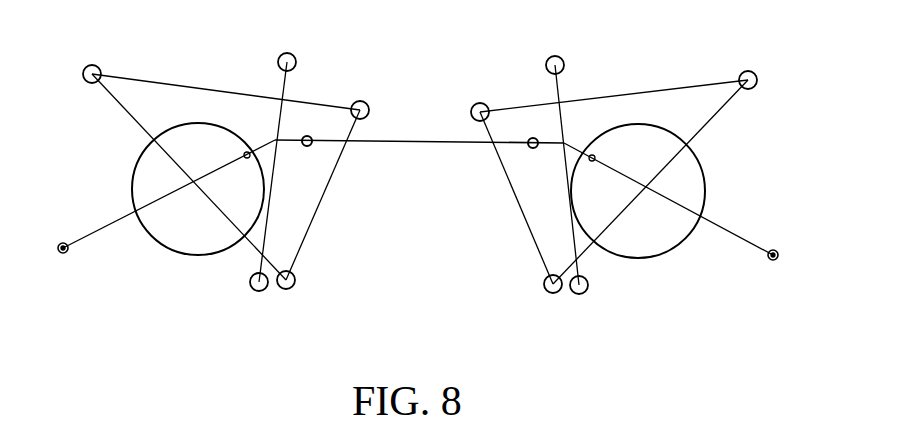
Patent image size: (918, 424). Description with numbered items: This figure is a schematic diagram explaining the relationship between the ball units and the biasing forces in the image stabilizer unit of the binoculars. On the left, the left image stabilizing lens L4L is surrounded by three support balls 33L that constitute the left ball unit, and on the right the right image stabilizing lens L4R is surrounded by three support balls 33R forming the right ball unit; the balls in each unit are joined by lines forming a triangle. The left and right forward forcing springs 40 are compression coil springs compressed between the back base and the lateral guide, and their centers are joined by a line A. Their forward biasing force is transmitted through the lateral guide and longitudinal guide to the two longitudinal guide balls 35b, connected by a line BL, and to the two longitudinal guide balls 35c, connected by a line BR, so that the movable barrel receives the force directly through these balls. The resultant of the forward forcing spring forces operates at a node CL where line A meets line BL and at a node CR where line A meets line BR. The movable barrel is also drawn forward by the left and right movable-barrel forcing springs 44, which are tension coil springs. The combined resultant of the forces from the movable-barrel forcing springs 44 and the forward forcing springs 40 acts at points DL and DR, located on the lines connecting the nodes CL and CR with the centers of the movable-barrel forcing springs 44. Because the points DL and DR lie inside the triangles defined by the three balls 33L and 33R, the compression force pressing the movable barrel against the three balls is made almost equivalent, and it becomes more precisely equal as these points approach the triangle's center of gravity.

The left support balls 33L is at (94, 65).
The right support balls 33R is at (477, 103).
The longitudinal guide balls 35b is at (288, 53).
The longitudinal guide balls 35c is at (557, 56).
The forward forcing spring 40 is at (307, 148).
The movable-barrel forcing spring 44 is at (66, 254).
The line A is at (428, 143).
The left image stabilizing lens L4L is at (168, 239).
The right image stabilizing lens L4R is at (686, 190).
The point DL is at (240, 152).
The node CL is at (272, 138).
The node CR is at (568, 140).
The point DR is at (598, 156).
The line BL is at (270, 230).
The line BR is at (568, 198).